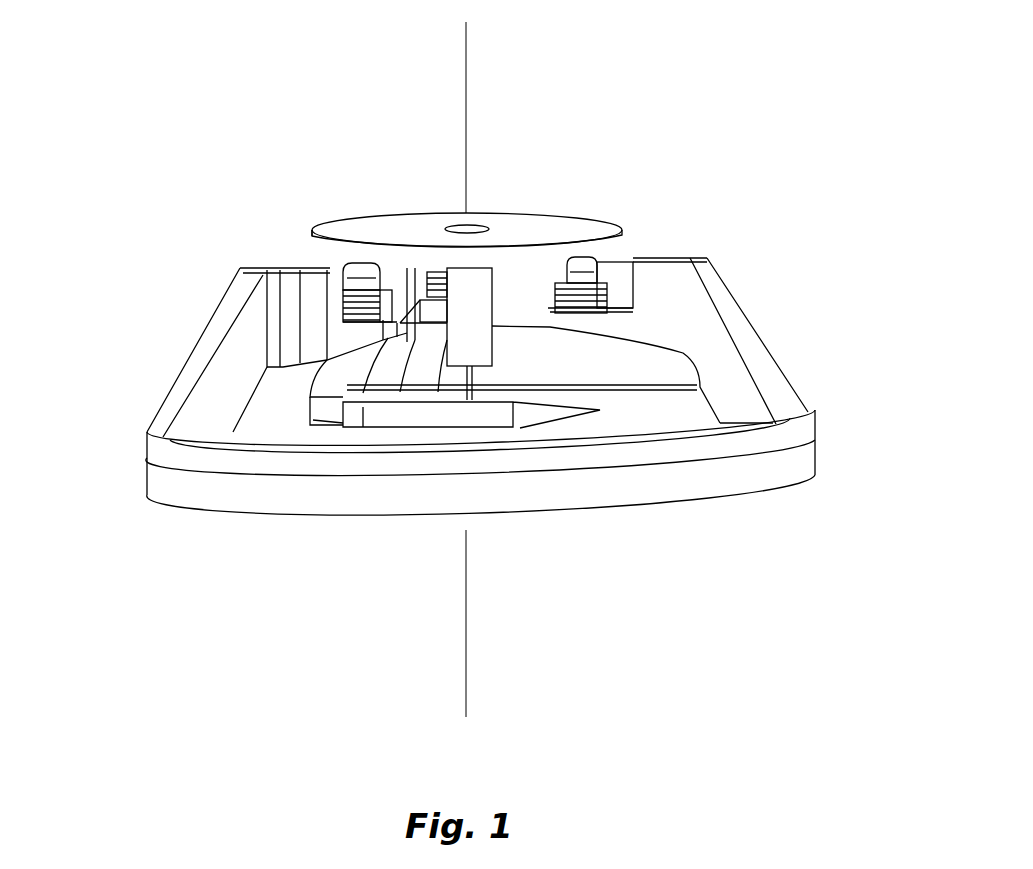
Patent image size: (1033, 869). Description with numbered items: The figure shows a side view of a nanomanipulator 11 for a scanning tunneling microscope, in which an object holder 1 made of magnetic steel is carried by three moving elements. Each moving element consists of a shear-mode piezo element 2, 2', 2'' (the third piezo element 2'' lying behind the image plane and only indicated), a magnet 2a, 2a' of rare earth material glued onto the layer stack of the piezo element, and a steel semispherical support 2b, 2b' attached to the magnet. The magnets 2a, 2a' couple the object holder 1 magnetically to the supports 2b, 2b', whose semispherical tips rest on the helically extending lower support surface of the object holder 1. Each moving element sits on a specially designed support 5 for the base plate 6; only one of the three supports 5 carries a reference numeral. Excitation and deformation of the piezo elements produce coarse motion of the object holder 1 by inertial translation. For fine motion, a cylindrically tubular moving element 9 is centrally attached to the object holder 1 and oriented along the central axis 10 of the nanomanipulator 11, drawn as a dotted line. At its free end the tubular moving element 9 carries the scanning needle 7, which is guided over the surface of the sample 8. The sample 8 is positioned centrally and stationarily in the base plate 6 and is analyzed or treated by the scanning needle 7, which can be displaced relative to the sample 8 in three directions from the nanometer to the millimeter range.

The object holder 1 is at (597, 212).
The shear-mode piezo element 2 is at (687, 242).
The magnet 2a is at (687, 225).
The semispherical support 2b is at (695, 190).
The shear-mode piezo element 2' is at (271, 256).
The magnet 2a' is at (259, 240).
The semispherical support 2b' is at (268, 204).
The shear-mode piezo element 2'' is at (367, 208).
The support 5 is at (735, 303).
The base plate 6 is at (817, 457).
The scanning needle 7 is at (477, 376).
The sample 8 is at (430, 410).
The cylindrically tubular moving element 9 is at (493, 318).
The central axis 10 is at (458, 391).
The nanomanipulator 11 is at (640, 77).